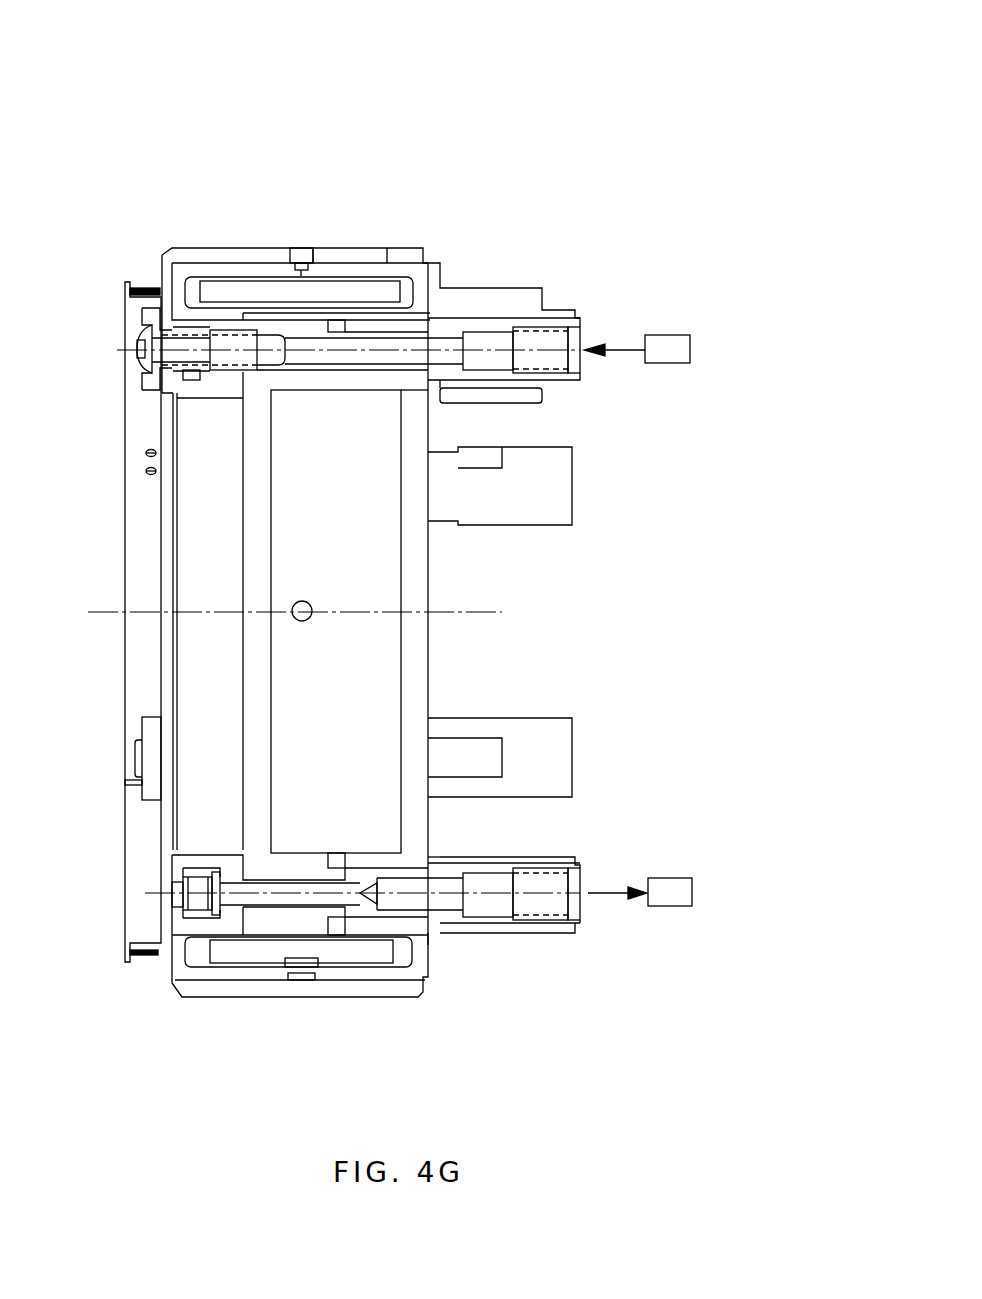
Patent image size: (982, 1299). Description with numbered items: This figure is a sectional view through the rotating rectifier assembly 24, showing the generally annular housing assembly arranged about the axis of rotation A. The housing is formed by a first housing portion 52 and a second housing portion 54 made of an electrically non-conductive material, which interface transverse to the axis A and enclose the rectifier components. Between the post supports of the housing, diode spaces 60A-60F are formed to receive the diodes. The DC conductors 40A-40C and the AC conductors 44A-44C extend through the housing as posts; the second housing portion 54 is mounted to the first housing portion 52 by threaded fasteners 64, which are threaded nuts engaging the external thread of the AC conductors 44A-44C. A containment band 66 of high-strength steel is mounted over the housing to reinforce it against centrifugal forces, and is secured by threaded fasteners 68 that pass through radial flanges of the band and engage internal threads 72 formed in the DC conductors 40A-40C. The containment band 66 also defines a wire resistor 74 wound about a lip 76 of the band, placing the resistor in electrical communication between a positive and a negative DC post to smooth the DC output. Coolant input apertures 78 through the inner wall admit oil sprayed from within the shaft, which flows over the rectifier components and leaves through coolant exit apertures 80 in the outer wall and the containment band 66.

The rectifier assembly 24 is at (638, 193).
The DC conductors 40A-40C is at (457, 372).
The AC conductors 44A-44C is at (287, 900).
The first housing portion 52 is at (367, 268).
The second housing portion 54 is at (200, 268).
The diode spaces 60A-60F is at (340, 287).
The threaded fasteners 64 is at (195, 915).
The containment band 66 is at (402, 257).
The threaded fasteners 68 is at (145, 328).
The internal threads 72 is at (210, 372).
The wire resistor 74 is at (140, 288).
The lip 76 is at (125, 283).
The coolant input apertures 78 is at (337, 383).
The coolant exit apertures 80 is at (296, 250).
The axis of rotation A is at (468, 612).